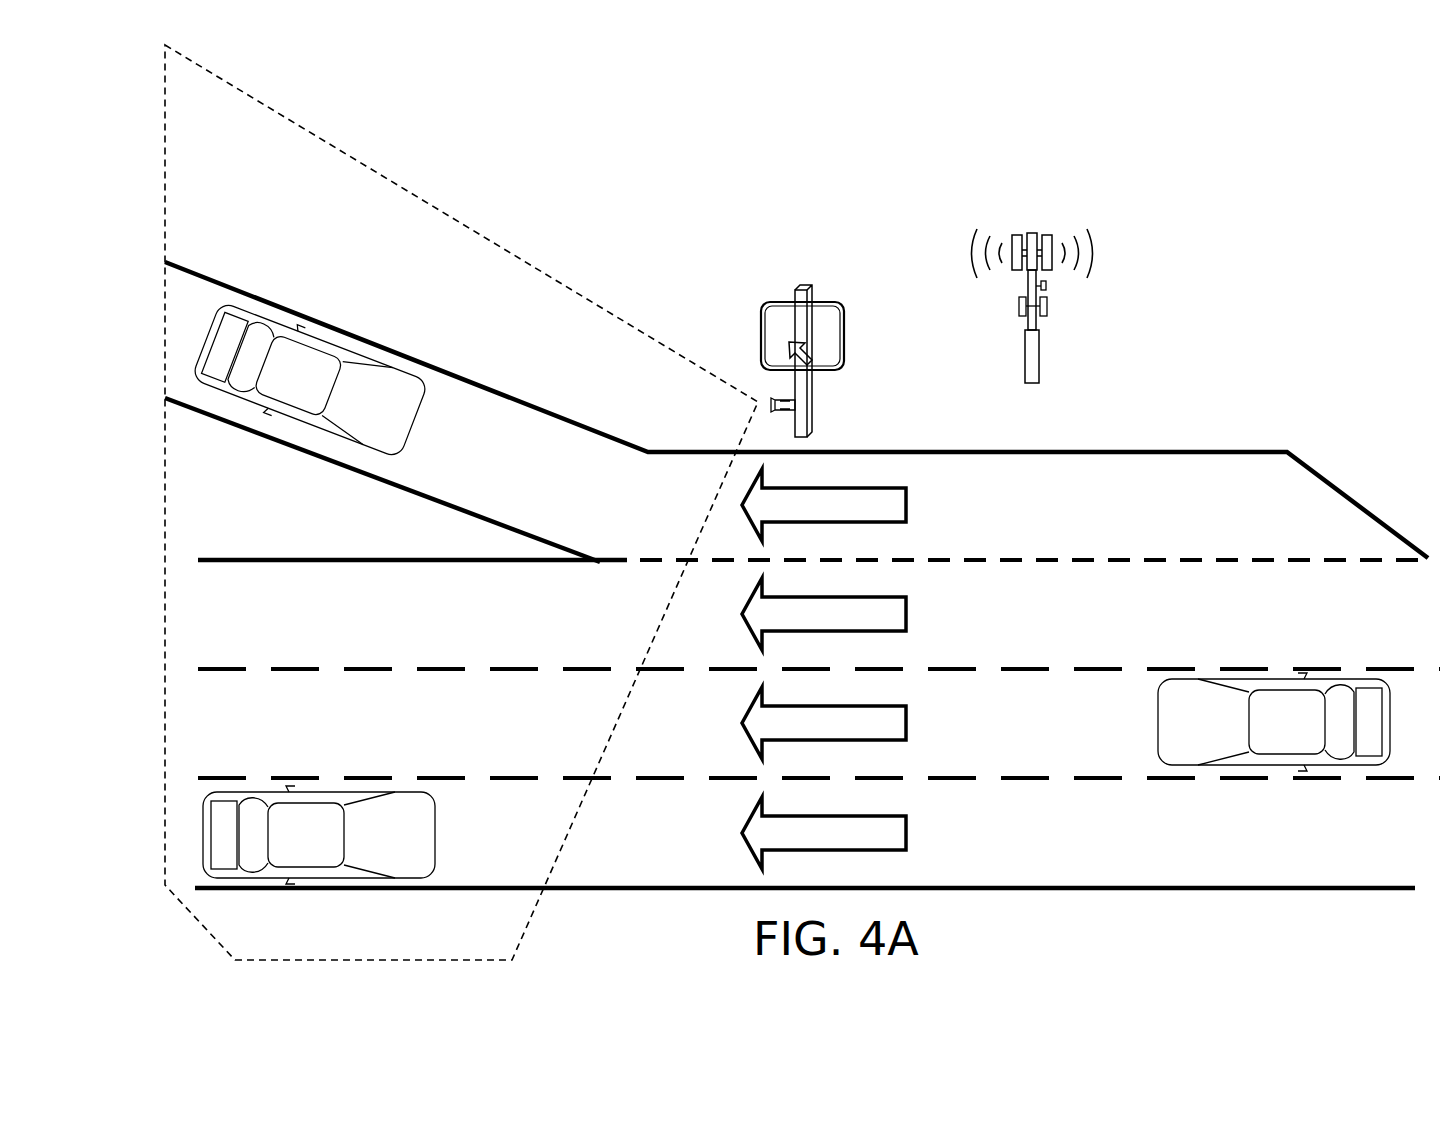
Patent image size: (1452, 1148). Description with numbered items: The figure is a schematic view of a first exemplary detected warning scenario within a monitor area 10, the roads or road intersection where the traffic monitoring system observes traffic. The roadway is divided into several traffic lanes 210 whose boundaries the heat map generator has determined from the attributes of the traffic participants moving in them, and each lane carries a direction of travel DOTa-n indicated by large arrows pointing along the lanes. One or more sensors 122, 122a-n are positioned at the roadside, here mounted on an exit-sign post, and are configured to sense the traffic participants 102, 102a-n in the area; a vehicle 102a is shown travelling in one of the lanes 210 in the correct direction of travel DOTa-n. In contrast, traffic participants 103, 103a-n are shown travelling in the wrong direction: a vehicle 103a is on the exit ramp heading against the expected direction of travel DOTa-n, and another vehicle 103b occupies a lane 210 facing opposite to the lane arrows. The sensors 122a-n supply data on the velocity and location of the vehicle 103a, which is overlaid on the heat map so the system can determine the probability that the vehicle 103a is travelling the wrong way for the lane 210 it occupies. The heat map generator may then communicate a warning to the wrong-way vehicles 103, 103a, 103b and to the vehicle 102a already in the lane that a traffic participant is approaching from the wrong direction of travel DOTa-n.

The monitor area 10 is at (1103, 390).
The traffic participants 102 is at (1212, 692).
The vehicle 102a is at (1190, 700).
The traffic participants travelling in the wrong direction 103 is at (312, 563).
The wrong-way driver vehicle 103a is at (325, 372).
The traffic participant travelling in the wrong direction 103b is at (416, 812).
The sensors 122 is at (727, 361).
The sensors 122a-n is at (770, 407).
The traffic lane 210 is at (197, 562).
The direction of travel DOTa-n is at (863, 492).